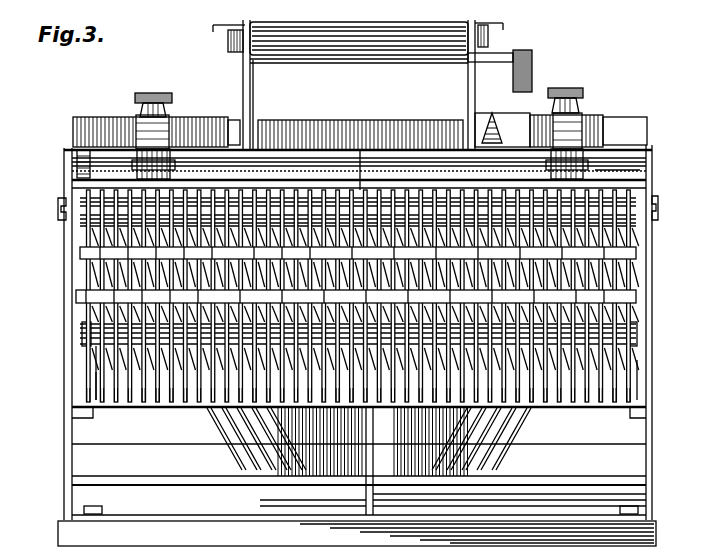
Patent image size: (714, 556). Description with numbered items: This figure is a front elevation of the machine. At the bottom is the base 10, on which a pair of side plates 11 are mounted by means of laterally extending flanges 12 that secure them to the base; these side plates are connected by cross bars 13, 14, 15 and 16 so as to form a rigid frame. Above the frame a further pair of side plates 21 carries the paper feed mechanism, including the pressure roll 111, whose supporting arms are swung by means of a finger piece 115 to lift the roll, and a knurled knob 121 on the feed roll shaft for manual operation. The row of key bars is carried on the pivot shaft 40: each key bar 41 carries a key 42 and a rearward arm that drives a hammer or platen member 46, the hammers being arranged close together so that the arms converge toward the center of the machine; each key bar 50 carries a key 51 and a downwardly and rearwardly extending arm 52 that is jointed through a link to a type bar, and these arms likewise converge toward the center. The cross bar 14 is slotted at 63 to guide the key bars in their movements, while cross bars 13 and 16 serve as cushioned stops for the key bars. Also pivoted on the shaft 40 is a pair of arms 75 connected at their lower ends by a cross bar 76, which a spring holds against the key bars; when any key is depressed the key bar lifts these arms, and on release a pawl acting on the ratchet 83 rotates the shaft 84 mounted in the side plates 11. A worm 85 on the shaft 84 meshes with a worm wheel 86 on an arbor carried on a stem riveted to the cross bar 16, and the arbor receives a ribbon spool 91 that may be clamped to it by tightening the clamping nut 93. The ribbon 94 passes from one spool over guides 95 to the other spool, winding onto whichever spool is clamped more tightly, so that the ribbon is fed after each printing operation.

The base 10 is at (648, 536).
The side plates 11 is at (70, 440).
The laterally extending flanges 12 is at (104, 514).
The cross bar 13 is at (568, 480).
The cross bar 14 is at (434, 442).
The cross bar 15 is at (407, 478).
The cross bar 16 is at (625, 172).
The side plates 21 is at (242, 48).
The shaft 40 is at (58, 207).
The key bar 41 is at (86, 276).
The key 42 is at (86, 255).
The hammer or platen member 46 is at (380, 125).
The key bar 50 is at (96, 346).
The key 51 is at (80, 298).
The downwardly and rearwardly extending arm 52 is at (250, 432).
The slot 63 is at (640, 372).
The arms 75 is at (84, 322).
The cross bar 76 is at (96, 372).
The ratchet 83 is at (77, 160).
The shaft 84 is at (396, 170).
The worm 85 is at (140, 163).
The worm wheel 86 is at (170, 163).
The ribbon spool 91 is at (88, 118).
The clamping nut 93 is at (153, 93).
The ribbon 94 is at (492, 125).
The guides 95 is at (250, 130).
The pressure roll 111 is at (370, 42).
The finger piece 115 is at (500, 27).
The knurled knob 121 is at (534, 60).